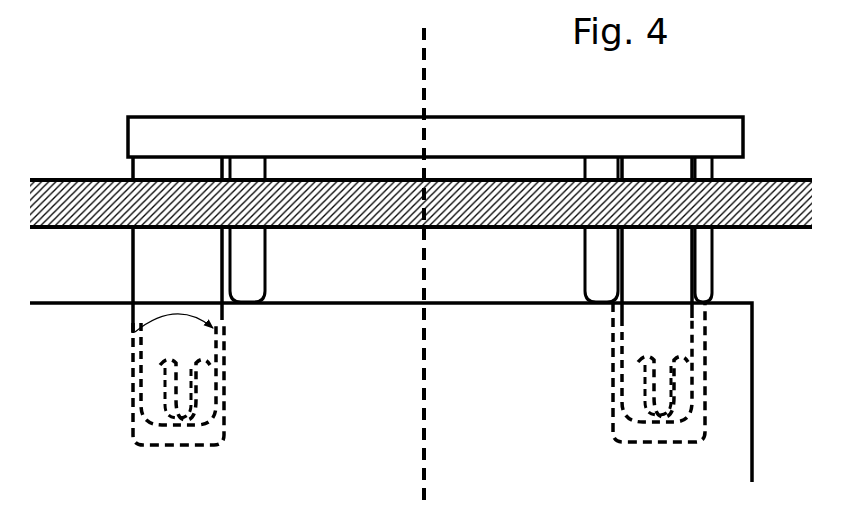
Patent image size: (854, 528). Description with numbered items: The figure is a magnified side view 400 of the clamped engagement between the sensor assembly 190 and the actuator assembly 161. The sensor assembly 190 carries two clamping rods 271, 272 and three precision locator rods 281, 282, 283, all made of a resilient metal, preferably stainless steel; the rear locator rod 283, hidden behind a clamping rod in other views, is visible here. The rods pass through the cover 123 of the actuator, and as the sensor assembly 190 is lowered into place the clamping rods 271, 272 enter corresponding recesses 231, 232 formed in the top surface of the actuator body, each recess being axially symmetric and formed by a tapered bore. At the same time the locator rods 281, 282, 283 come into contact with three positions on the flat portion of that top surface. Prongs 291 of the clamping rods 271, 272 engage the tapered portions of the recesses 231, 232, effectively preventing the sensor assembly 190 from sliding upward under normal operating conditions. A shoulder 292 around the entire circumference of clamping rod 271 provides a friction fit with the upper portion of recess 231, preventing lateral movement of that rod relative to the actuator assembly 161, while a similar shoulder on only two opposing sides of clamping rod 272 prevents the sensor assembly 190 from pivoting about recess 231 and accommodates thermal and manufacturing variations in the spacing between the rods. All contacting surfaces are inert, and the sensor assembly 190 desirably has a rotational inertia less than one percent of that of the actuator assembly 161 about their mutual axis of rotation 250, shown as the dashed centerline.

The side view 400 is at (166, 81).
The cover 123 is at (78, 179).
The sensor assembly 190 is at (393, 146).
The clamping rod 271 is at (193, 279).
The clamping rod 272 is at (678, 279).
The locator rod 281 is at (247, 256).
The locator rod 282 is at (603, 254).
The rear locator rod 283 is at (703, 254).
The actuator assembly 161 is at (355, 369).
The mutual axis of rotation 250 is at (427, 392).
The recess 231 is at (212, 432).
The recess 232 is at (610, 430).
The prongs 291 is at (138, 400).
The shoulder 292 is at (135, 332).